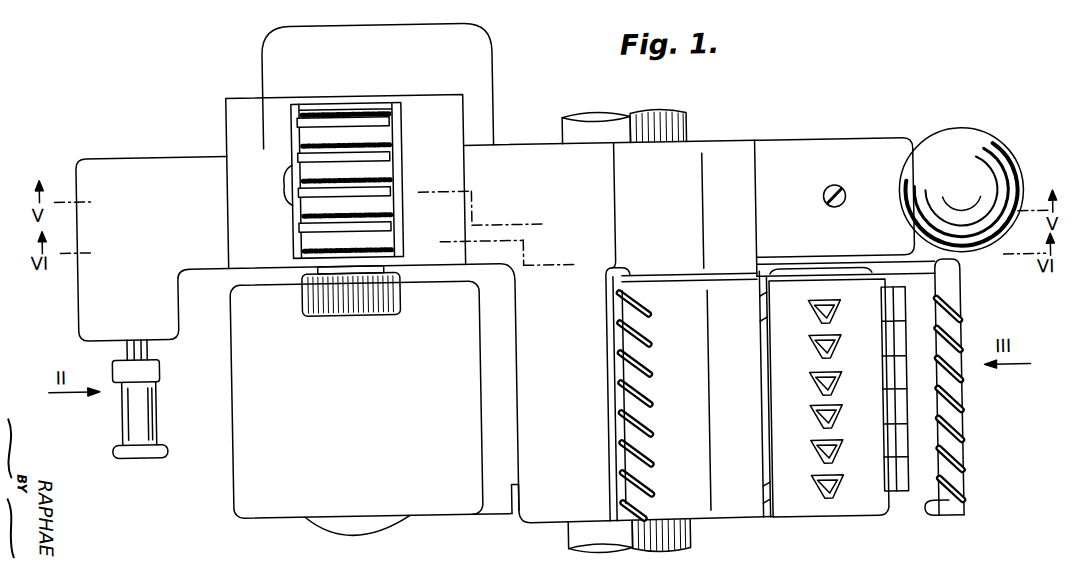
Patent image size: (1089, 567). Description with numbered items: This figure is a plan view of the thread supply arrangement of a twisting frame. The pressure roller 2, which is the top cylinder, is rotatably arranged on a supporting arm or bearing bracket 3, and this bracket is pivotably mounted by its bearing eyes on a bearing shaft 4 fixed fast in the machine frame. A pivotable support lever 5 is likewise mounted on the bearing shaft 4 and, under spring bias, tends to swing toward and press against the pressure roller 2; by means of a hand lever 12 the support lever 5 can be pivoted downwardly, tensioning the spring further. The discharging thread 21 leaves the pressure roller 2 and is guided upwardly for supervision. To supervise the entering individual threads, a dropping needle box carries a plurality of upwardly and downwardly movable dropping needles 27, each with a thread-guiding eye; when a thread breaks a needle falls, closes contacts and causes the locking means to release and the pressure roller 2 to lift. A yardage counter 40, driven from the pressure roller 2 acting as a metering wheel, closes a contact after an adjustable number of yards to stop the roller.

The pressure roller 2 is at (288, 503).
The bearing bracket 3 is at (197, 172).
The bearing shaft 4 is at (686, 541).
The support lever 5 is at (493, 496).
The hand lever 12 is at (992, 168).
The discharging thread 21 is at (154, 396).
The dropping needles 27 is at (834, 460).
The yardage counter 40 is at (442, 130).